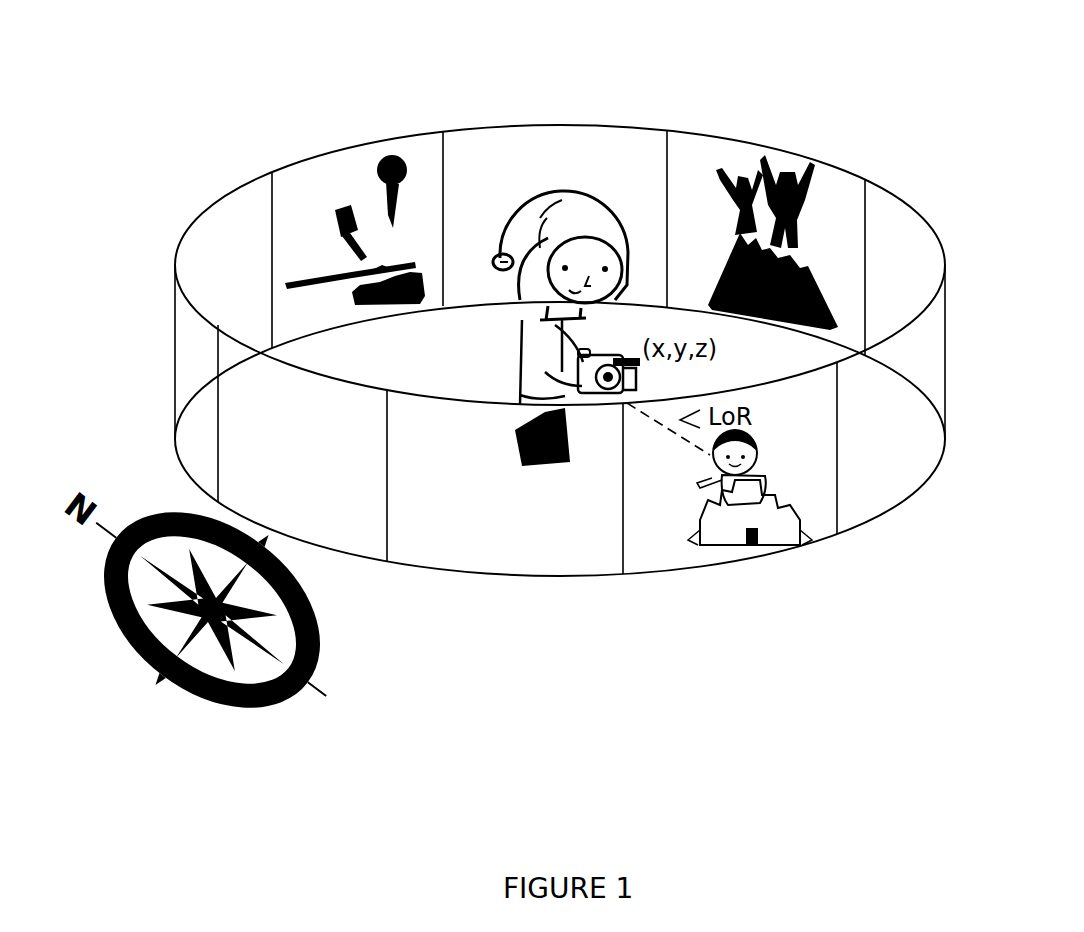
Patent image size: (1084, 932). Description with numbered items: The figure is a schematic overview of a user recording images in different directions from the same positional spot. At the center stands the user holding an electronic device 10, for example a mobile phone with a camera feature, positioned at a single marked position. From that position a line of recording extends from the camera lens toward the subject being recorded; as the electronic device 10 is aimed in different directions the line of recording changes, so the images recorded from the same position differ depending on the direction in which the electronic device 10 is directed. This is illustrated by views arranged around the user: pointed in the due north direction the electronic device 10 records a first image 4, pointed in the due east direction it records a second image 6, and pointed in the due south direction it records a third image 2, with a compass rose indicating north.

The first image 4 is at (325, 170).
The second image 6 is at (712, 168).
The electronic device 10 is at (598, 392).
The third image 2 is at (803, 528).